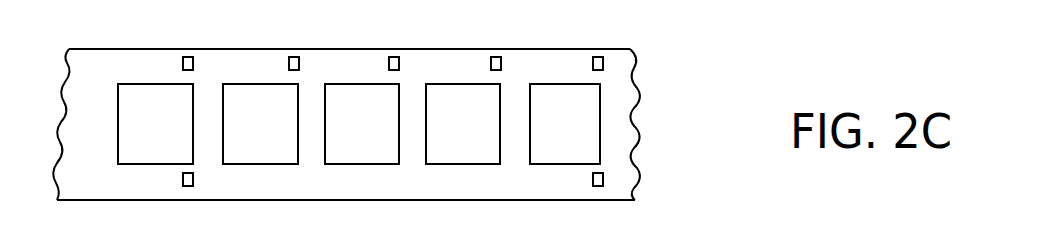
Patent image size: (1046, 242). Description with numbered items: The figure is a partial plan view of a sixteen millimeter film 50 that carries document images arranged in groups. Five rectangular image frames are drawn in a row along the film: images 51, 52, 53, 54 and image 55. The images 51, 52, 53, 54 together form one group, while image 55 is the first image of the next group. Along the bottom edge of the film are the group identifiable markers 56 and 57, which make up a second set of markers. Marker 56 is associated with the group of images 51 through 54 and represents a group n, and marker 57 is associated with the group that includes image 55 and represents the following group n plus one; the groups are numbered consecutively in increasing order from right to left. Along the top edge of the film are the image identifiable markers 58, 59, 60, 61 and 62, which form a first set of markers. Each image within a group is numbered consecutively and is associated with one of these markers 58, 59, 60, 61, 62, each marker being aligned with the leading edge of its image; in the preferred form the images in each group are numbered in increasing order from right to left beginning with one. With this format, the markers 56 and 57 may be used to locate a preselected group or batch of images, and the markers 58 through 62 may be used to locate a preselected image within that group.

The film 50 is at (412, 188).
The image 51 is at (565, 164).
The image 52 is at (462, 164).
The image 53 is at (364, 164).
The image 54 is at (263, 164).
The image 55 is at (157, 164).
The group identifiable marker 56 is at (600, 188).
The group identifiable marker 57 is at (189, 187).
The image identifiable marker 58 is at (598, 57).
The image identifiable marker 59 is at (496, 57).
The image identifiable marker 60 is at (394, 57).
The image identifiable marker 61 is at (295, 57).
The image identifiable marker 62 is at (195, 29).